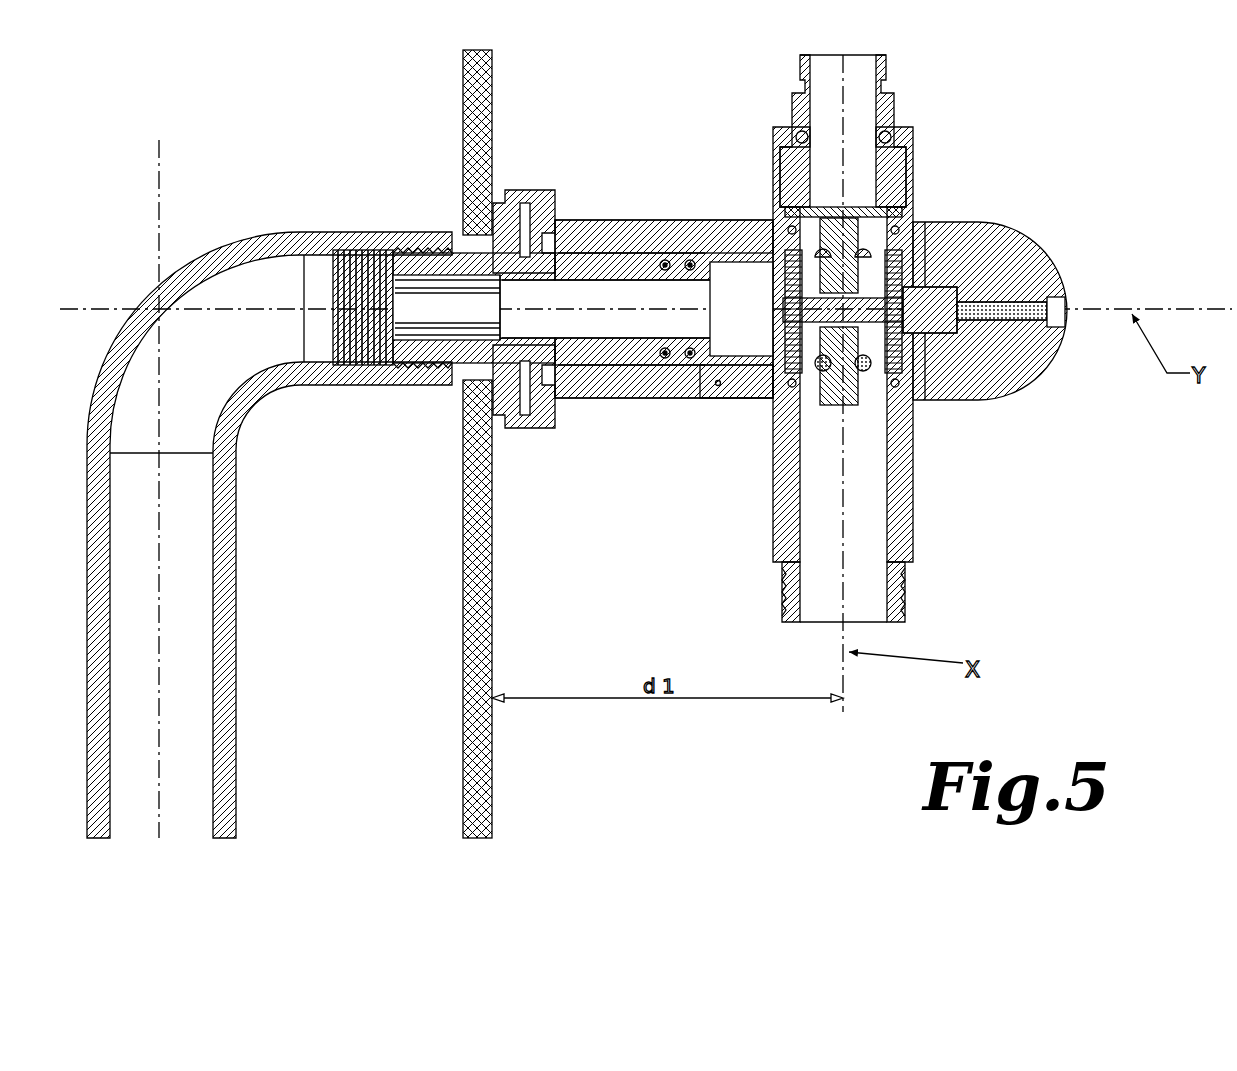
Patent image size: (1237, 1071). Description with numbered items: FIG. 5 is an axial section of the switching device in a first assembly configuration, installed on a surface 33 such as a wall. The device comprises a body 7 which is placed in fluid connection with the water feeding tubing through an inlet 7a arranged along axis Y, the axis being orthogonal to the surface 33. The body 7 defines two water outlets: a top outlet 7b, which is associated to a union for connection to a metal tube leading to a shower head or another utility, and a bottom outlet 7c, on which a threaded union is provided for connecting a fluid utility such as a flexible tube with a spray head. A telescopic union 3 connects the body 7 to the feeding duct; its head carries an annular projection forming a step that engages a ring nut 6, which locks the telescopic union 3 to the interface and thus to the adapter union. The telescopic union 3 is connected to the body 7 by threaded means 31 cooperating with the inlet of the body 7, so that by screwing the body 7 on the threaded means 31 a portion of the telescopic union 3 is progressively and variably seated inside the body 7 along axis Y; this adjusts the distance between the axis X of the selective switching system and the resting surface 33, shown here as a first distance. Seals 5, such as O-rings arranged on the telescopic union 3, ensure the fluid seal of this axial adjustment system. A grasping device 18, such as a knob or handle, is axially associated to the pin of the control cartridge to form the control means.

The telescopic union 3 is at (628, 398).
The seals 5 is at (693, 250).
The ring nut 6 is at (523, 193).
The body 7 is at (742, 424).
The inlet 7a is at (717, 384).
The top outlet 7b is at (915, 158).
The bottom outlet 7c is at (913, 480).
The grasping device 18 is at (1028, 247).
The threaded means 31 is at (597, 222).
The surface 33 is at (463, 559).